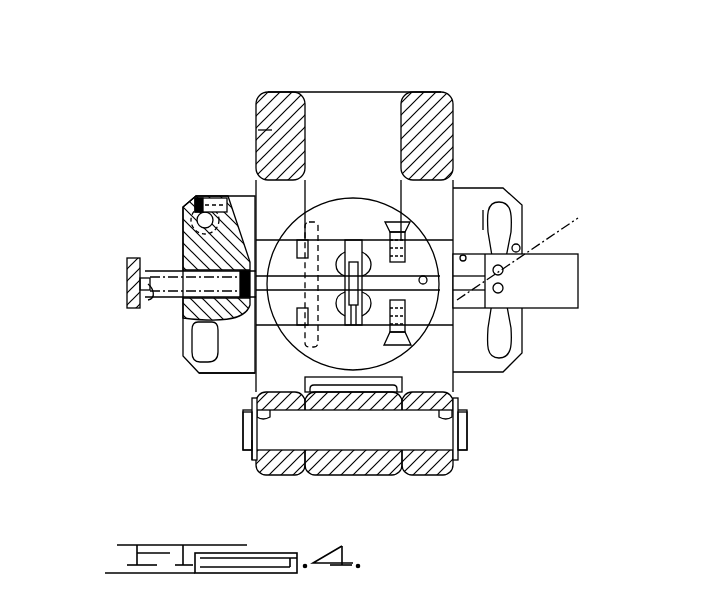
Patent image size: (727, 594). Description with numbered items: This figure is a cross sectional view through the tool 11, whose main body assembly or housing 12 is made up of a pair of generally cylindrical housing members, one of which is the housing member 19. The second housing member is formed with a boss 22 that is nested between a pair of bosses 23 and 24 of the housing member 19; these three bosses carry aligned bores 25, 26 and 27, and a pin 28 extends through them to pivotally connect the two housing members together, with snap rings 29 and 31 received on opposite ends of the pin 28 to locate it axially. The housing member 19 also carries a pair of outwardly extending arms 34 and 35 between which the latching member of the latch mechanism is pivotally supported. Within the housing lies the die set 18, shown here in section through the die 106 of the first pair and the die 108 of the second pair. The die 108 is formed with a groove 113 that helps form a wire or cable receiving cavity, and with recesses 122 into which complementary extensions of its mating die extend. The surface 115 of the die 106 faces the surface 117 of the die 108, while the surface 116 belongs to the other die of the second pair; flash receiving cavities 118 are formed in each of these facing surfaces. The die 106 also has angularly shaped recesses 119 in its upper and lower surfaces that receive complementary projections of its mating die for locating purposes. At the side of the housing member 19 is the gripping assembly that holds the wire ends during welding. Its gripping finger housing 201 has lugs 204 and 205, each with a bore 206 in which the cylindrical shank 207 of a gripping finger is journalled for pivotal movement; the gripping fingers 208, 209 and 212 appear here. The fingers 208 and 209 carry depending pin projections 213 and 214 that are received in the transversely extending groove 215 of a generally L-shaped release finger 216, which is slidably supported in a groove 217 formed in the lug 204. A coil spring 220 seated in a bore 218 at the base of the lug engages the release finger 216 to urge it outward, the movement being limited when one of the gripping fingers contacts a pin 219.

The tool 11 is at (474, 150).
The main body assembly or housing 12 is at (302, 92).
The die set 18 is at (328, 238).
The housing member 19 is at (268, 112).
The outwardly extending arm 34 is at (420, 100).
The outwardly extending arm 35 is at (272, 130).
The die 108 is at (314, 182).
The recesses 122 is at (300, 240).
The groove 113 is at (286, 282).
The surface 117 is at (349, 240).
The flash receiving cavities 118 is at (356, 240).
The surface 115 is at (354, 322).
The surface 116 is at (409, 250).
The angularly shaped recesses 119 is at (422, 332).
The die 106 is at (426, 246).
The lug 205 is at (192, 210).
The gripping finger housing 201 is at (188, 384).
The bore 206 is at (197, 221).
The cylindrical shank 207 is at (200, 237).
The bore 218 is at (186, 300).
The release finger 216 is at (127, 285).
The coil spring 220 is at (150, 302).
The gripping finger 212 is at (200, 344).
The lug 204 is at (504, 200).
The gripping finger 208 is at (504, 216).
The gripping finger 209 is at (500, 340).
The depending pin projection 214 is at (515, 263).
The pin 219 is at (520, 248).
The depending pin projection 213 is at (504, 270).
The transversely extending groove 215 is at (495, 294).
The groove 217 is at (464, 254).
The boss 23 is at (270, 470).
The boss 22 is at (330, 470).
The boss 24 is at (437, 470).
The bore 25 is at (354, 420).
The bore 26 is at (252, 414).
The bore 27 is at (460, 414).
The pin 28 is at (246, 431).
The snap ring 31 is at (462, 455).
The snap ring 29 is at (250, 453).